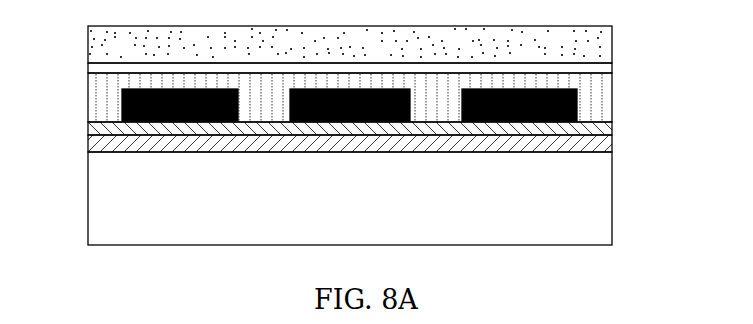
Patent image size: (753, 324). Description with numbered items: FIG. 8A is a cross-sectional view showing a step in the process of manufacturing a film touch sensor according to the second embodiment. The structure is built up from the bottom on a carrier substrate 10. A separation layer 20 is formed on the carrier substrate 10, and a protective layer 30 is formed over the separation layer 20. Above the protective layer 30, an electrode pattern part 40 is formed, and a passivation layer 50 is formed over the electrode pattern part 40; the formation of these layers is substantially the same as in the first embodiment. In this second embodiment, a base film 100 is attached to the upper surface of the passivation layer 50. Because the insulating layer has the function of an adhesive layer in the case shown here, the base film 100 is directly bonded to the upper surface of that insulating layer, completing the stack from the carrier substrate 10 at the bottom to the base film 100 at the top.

The carrier substrate 10 is at (613, 188).
The separation layer 20 is at (613, 142).
The protective layer 30 is at (86, 128).
The electrode pattern part 40 is at (642, 77).
The passivation layer 50 is at (613, 67).
The base film 100 is at (613, 42).